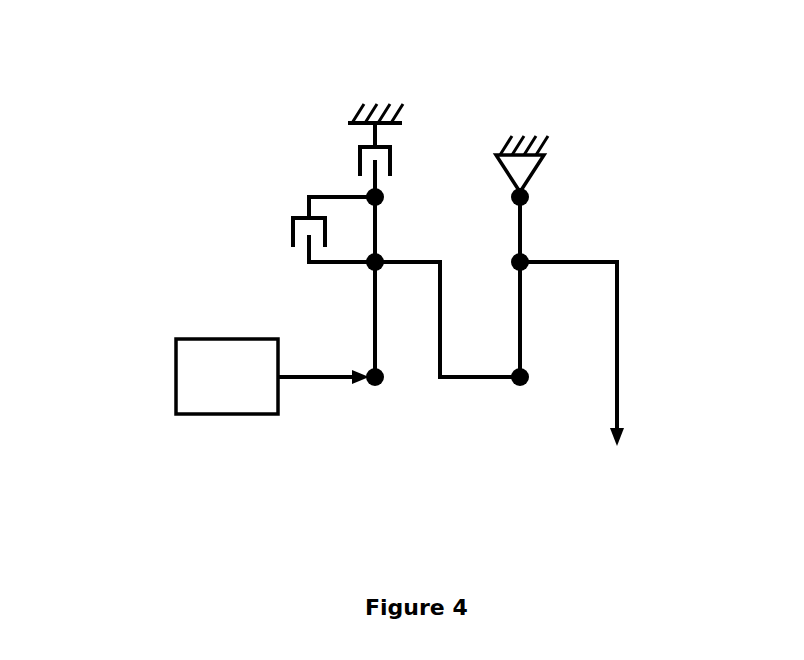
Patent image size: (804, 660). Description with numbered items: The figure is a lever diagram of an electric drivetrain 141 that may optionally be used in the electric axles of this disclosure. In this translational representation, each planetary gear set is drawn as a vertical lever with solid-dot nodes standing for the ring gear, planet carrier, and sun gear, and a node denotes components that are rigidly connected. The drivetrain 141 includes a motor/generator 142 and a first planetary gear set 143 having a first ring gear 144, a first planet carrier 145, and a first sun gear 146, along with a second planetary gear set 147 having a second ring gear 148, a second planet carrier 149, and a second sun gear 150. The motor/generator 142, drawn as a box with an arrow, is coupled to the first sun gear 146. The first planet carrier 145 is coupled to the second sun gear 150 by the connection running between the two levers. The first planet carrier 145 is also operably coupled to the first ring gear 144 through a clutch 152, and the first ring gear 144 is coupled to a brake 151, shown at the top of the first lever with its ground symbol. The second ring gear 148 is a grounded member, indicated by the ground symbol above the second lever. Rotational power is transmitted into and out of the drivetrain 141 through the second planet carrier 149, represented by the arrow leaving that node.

The electric drivetrain 141 is at (186, 50).
The motor/generator 142 is at (205, 338).
The first planetary gear set 143 is at (369, 464).
The first ring gear 144 is at (378, 190).
The first planet carrier 145 is at (368, 265).
The first sun gear 146 is at (385, 380).
The second planetary gear set 147 is at (521, 455).
The second ring gear 148 is at (528, 188).
The second planet carrier 149 is at (527, 256).
The second sun gear 150 is at (529, 380).
The brake 151 is at (360, 148).
The clutch 152 is at (295, 216).